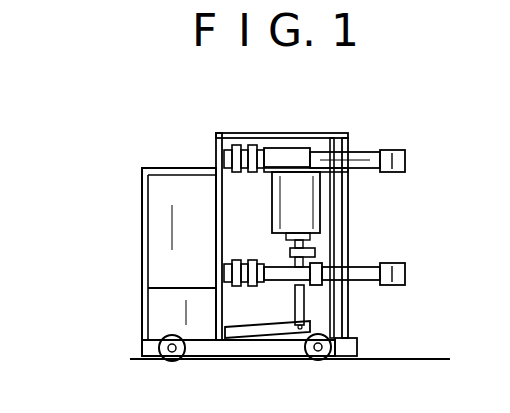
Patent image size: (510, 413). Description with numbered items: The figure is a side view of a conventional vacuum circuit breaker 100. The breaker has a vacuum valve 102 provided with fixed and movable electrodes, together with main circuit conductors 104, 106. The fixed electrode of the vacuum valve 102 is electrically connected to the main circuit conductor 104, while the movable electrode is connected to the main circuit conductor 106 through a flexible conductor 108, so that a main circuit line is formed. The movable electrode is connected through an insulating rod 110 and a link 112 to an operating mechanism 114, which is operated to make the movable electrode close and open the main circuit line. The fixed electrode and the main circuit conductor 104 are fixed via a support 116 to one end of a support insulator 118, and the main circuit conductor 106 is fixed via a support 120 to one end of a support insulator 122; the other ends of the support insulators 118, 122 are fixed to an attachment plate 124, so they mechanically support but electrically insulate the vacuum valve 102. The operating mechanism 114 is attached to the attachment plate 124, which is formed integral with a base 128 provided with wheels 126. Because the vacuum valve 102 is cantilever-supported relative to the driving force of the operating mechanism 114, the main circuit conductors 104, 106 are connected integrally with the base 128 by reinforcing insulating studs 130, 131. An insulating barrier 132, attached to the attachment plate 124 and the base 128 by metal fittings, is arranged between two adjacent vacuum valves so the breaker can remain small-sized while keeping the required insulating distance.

The vacuum circuit breaker 100 is at (128, 186).
The vacuum valve 102 is at (318, 195).
The main circuit conductor 104 is at (405, 158).
The main circuit conductor 106 is at (405, 272).
The flexible conductor 108 is at (315, 253).
The insulating rod 110 is at (303, 315).
The link 112 is at (247, 332).
The operating mechanism 114 is at (160, 242).
The support 116 is at (286, 150).
The support insulator 118 is at (243, 148).
The support 120 is at (280, 287).
The support insulator 122 is at (236, 262).
The attachment plate 124 is at (216, 158).
The wheels 126 is at (160, 362).
The base 128 is at (200, 354).
The reinforcing insulating stud 130 is at (338, 227).
The reinforcing insulating stud 131 is at (335, 307).
The insulating barrier 132 is at (336, 133).